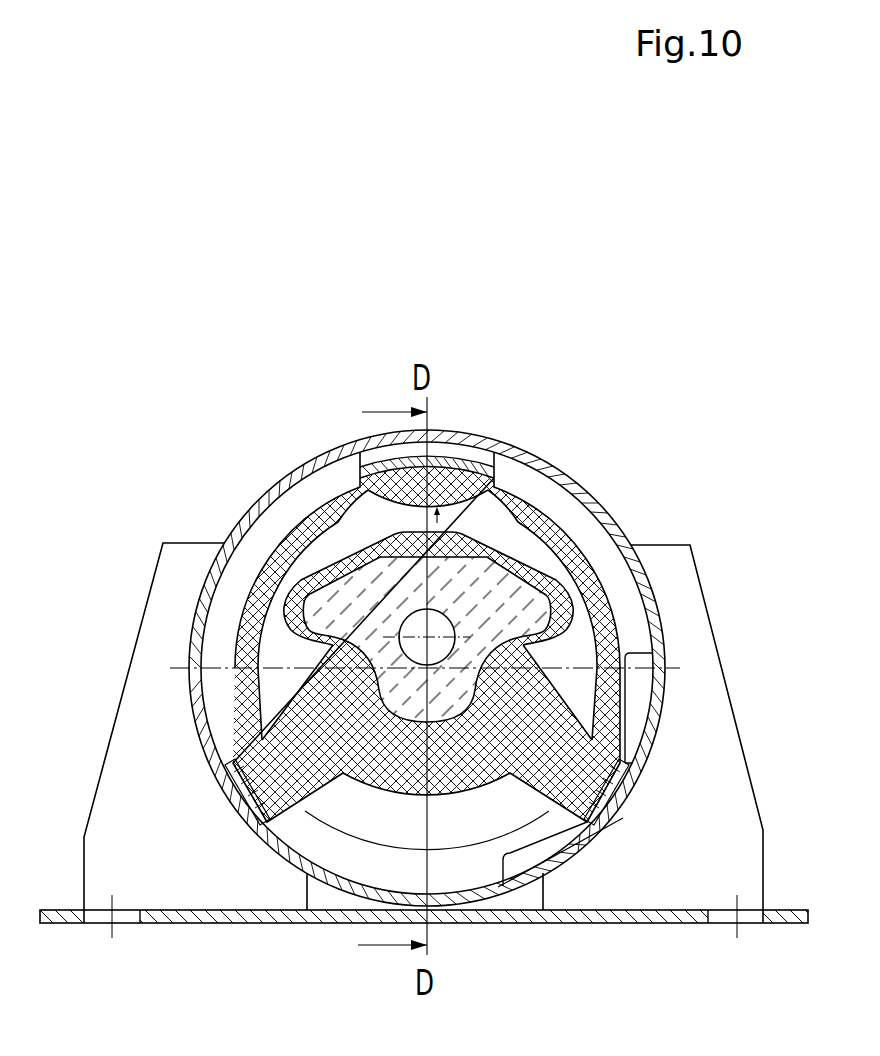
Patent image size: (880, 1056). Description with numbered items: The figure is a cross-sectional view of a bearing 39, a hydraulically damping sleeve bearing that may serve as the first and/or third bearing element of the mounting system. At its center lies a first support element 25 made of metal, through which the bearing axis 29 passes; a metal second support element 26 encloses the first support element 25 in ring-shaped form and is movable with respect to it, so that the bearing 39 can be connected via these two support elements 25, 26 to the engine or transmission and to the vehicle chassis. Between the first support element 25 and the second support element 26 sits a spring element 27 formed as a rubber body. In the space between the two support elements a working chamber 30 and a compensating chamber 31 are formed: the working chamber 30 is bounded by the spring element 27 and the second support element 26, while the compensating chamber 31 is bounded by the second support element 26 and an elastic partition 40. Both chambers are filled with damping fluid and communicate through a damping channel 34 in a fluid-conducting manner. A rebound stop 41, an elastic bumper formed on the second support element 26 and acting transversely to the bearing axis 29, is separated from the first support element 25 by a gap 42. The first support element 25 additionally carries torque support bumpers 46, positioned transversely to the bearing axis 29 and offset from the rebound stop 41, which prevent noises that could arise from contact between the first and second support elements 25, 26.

The first support element 25 is at (347, 590).
The second support element 26 is at (620, 527).
The spring element 27 is at (303, 787).
The bearing axis 29 is at (420, 636).
The working chamber 30 is at (362, 867).
The compensating chamber 31 is at (530, 480).
The damping channel 34 is at (640, 702).
The bearing 39 is at (582, 443).
The elastic partition 40 is at (607, 597).
The rebound stop 41 is at (363, 480).
The gap 42 is at (440, 522).
The torque support bumpers 46 is at (282, 598).